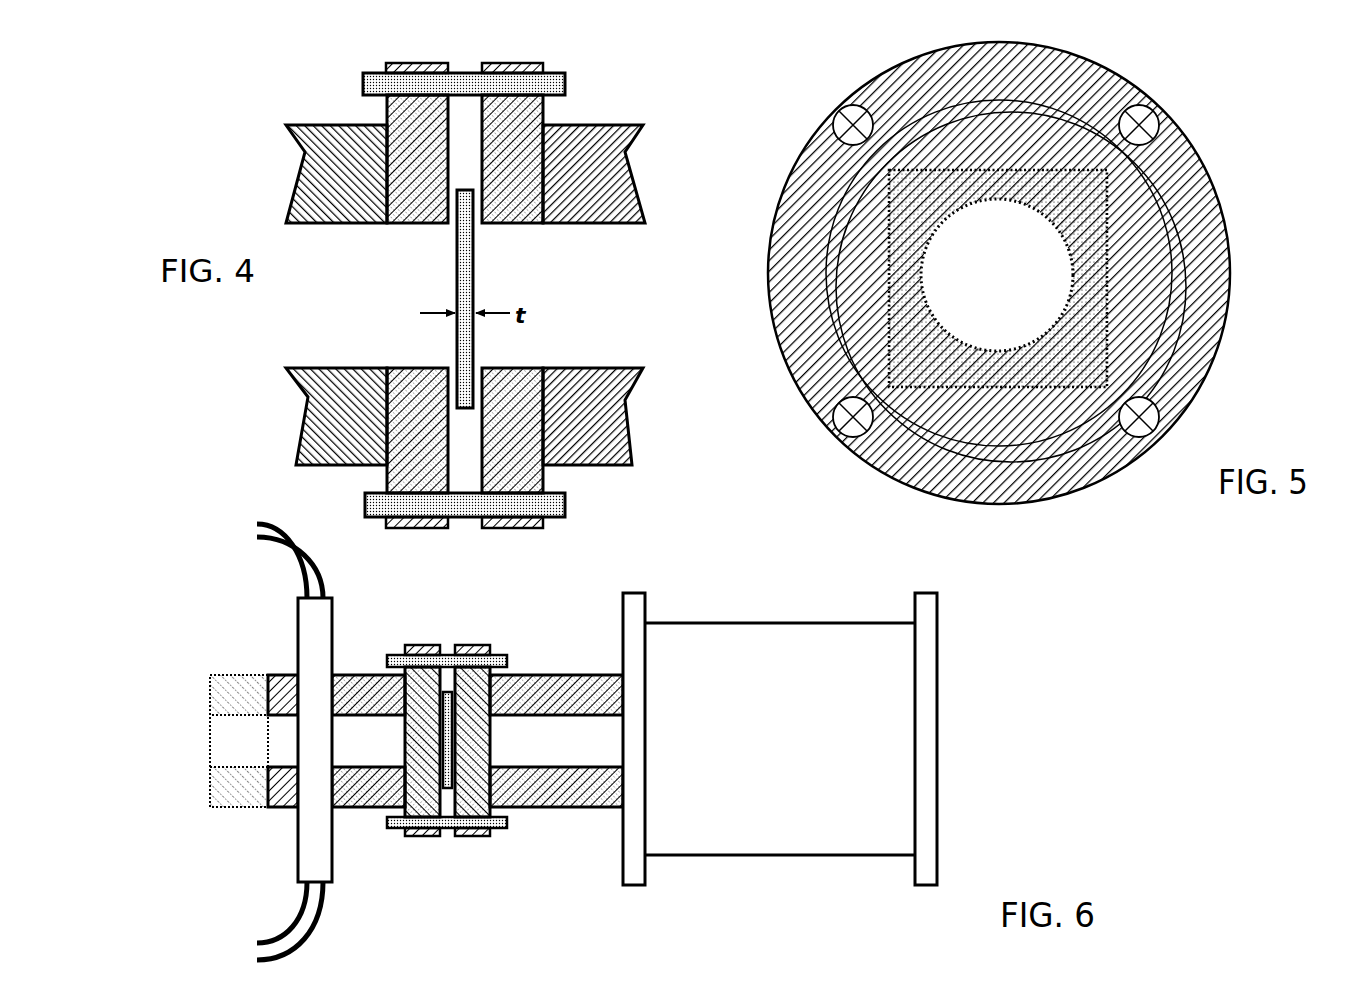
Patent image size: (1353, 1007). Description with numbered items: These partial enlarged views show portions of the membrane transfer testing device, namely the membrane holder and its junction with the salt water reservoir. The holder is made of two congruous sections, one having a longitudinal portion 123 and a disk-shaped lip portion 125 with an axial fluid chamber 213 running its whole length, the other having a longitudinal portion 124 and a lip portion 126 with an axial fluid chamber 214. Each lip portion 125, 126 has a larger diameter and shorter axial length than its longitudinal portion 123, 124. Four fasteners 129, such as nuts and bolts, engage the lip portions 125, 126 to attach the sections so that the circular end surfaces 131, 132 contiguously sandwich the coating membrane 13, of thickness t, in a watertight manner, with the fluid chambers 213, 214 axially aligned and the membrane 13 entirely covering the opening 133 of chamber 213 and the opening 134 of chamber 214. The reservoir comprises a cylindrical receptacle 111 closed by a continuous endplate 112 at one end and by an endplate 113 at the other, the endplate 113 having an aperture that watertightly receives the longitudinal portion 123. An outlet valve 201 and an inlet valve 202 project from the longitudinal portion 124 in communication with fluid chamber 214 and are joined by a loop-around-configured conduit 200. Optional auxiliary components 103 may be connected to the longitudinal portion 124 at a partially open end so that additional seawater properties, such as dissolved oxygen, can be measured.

In FIG. 4, the coating membrane 13 is at (457, 275).
In FIG. 5, the coating membrane 13 is at (985, 258).
In FIG. 6, the coating membrane 13 is at (453, 740).
In FIG. 6, the auxiliary components 103 is at (232, 808).
In FIG. 6, the receptacle 111 is at (780, 817).
In FIG. 6, the endplate 112 is at (927, 715).
In FIG. 6, the endplate 113 is at (635, 867).
In FIG. 4, the longitudinal portion 123 is at (577, 224).
In FIG. 5, the longitudinal portion 123 is at (981, 281).
In FIG. 6, the longitudinal portion 123 is at (542, 680).
In FIG. 4, the longitudinal portion 124 is at (348, 182).
In FIG. 5, the longitudinal portion 124 is at (981, 281).
In FIG. 6, the longitudinal portion 124 is at (367, 808).
In FIG. 4, the lip portion 125 is at (563, 281).
In FIG. 5, the lip portion 125 is at (985, 273).
In FIG. 6, the lip portion 125 is at (470, 840).
In FIG. 4, the lip portion 126 is at (345, 288).
In FIG. 5, the lip portion 126 is at (985, 273).
In FIG. 6, the lip portion 126 is at (418, 838).
In FIG. 4, the fasteners 129 is at (363, 82).
In FIG. 5, the fasteners 129 is at (833, 122).
In FIG. 4, the end surface 131 is at (490, 420).
In FIG. 4, the end surface 132 is at (430, 420).
In FIG. 5, the opening 133 is at (881, 261).
In FIG. 5, the opening 134 is at (881, 261).
In FIG. 6, the conduit 200 is at (297, 568).
In FIG. 6, the outlet valve 201 is at (315, 853).
In FIG. 6, the inlet valve 202 is at (257, 741).
In FIG. 5, the axial fluid chamber 213 is at (881, 233).
In FIG. 5, the axial fluid chamber 214 is at (881, 248).